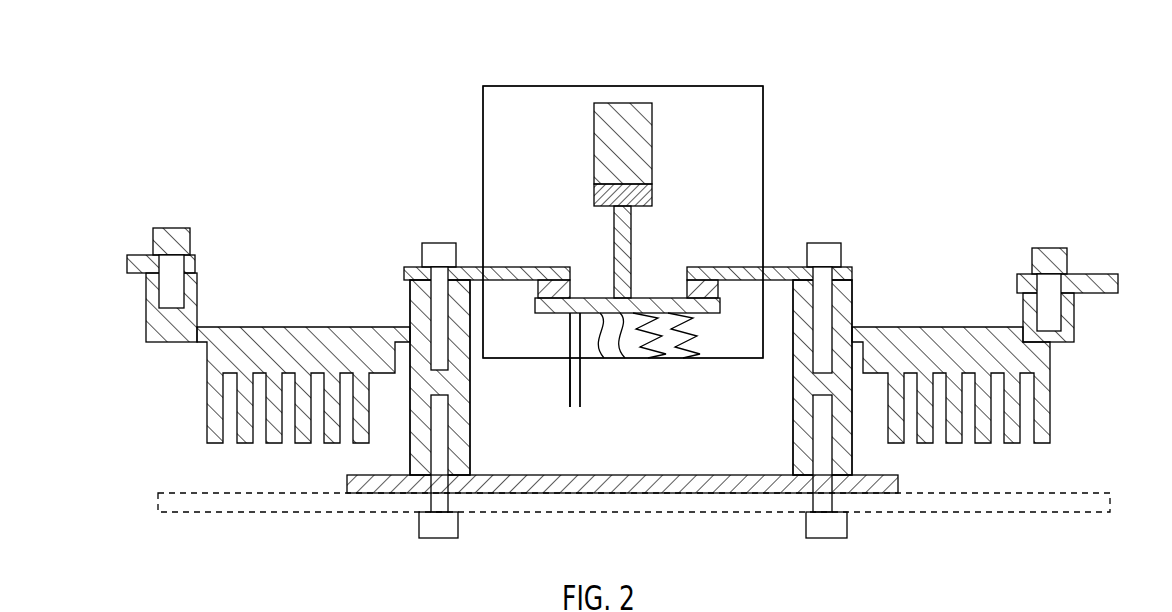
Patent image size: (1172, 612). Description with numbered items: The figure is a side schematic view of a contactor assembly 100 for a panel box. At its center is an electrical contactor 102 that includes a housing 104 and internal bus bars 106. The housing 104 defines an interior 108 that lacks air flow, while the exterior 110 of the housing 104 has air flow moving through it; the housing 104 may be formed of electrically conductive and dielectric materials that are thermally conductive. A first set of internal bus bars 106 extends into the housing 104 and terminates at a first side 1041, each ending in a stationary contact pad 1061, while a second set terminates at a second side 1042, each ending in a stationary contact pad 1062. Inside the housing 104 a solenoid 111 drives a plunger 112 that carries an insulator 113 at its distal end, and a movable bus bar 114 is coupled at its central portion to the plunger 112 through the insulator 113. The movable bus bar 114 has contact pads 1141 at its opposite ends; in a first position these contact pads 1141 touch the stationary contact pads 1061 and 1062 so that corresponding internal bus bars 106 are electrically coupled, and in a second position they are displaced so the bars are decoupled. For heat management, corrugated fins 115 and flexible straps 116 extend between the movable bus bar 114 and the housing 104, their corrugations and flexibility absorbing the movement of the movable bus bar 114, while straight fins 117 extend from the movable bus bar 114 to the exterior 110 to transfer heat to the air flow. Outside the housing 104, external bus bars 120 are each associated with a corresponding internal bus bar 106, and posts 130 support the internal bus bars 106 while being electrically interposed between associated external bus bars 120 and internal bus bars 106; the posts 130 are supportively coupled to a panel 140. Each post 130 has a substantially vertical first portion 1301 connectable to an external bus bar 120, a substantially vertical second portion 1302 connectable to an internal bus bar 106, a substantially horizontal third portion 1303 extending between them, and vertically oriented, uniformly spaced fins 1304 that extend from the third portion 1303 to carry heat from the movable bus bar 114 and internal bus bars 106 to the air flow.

The contactor assembly 100 is at (383, 102).
The electrical contactor 102 is at (768, 108).
The housing 104 is at (763, 140).
The internal bus bars 106 is at (476, 267).
The interior 108 is at (722, 140).
The exterior 110 is at (452, 135).
The solenoid 111 is at (607, 152).
The plunger 112 is at (622, 226).
The insulator 113 is at (622, 296).
The movable bus bar 114 is at (582, 352).
The contact pads 1141 is at (553, 313).
The corrugated fins 115 is at (662, 352).
The flexible straps 116 is at (593, 313).
The straight fins 117 is at (572, 398).
The external bus bars 120 is at (142, 267).
The posts 130 is at (410, 293).
The first portion 1301 is at (170, 333).
The second portion 1302 is at (413, 463).
The third portion 1303 is at (293, 333).
The fins 1304 is at (273, 438).
The panel 140 is at (604, 494).
The first side 1041 is at (572, 266).
The second side 1042 is at (745, 264).
The stationary contact pad 1061 is at (540, 282).
The stationary contact pad 1062 is at (719, 282).